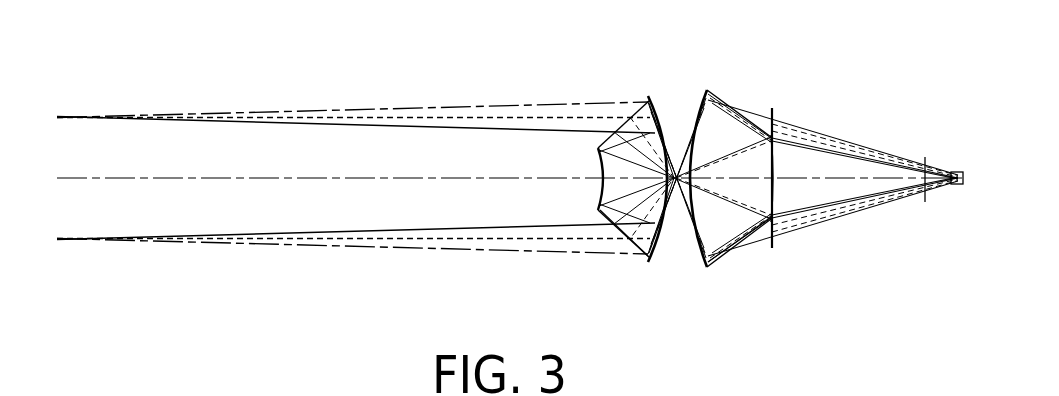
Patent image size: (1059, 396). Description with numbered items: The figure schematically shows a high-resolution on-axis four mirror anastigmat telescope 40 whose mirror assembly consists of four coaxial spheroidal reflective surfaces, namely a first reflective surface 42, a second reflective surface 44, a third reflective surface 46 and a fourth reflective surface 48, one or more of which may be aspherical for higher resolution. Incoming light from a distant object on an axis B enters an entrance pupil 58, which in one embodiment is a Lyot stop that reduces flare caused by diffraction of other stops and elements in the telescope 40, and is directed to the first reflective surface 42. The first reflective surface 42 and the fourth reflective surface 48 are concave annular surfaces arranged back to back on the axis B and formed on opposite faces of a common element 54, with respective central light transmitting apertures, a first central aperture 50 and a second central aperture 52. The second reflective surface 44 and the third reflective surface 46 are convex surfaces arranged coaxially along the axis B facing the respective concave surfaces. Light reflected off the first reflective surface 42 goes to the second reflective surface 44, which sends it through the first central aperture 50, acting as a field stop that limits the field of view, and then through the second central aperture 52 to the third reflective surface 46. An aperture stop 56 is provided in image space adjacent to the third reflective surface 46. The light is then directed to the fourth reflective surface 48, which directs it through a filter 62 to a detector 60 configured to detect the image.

The on-axis four mirror anastigmat telescope 40 is at (708, 298).
The first reflective surface 42 is at (629, 156).
The second reflective surface 44 is at (625, 243).
The third reflective surface 46 is at (764, 200).
The fourth reflective surface 48 is at (741, 171).
The first central aperture 50 is at (683, 205).
The second central aperture 52 is at (677, 135).
The common element 54 is at (670, 125).
The aperture stop 56 is at (774, 124).
The entrance pupil 58 is at (77, 245).
The detector 60 is at (962, 172).
The filter 62 is at (930, 190).
The axis B is at (283, 180).